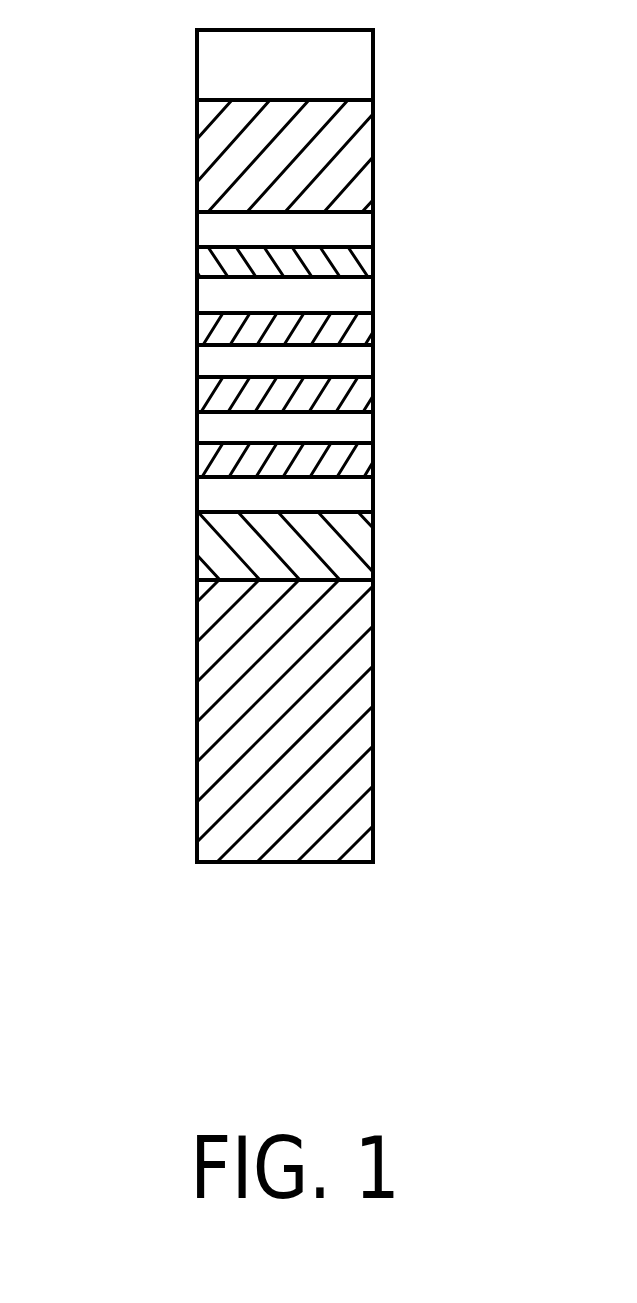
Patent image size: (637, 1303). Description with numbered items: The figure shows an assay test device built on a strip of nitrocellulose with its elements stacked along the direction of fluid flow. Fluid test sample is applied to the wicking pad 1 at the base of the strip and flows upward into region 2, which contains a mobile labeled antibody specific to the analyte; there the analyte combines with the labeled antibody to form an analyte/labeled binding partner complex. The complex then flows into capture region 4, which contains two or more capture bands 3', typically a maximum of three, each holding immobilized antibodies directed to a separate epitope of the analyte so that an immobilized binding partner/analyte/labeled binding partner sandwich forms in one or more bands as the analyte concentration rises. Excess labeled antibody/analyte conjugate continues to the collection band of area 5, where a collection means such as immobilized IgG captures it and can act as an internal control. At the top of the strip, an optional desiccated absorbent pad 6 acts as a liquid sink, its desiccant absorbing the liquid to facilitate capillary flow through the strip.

The wicking pad 1 is at (373, 753).
The region containing mobile labeled specific binding partner 2 is at (373, 555).
The capture bands 3' is at (216, 365).
The capture region 4 is at (277, 365).
The collection band area 5 is at (373, 253).
The desiccated absorbent pad 6 is at (373, 143).